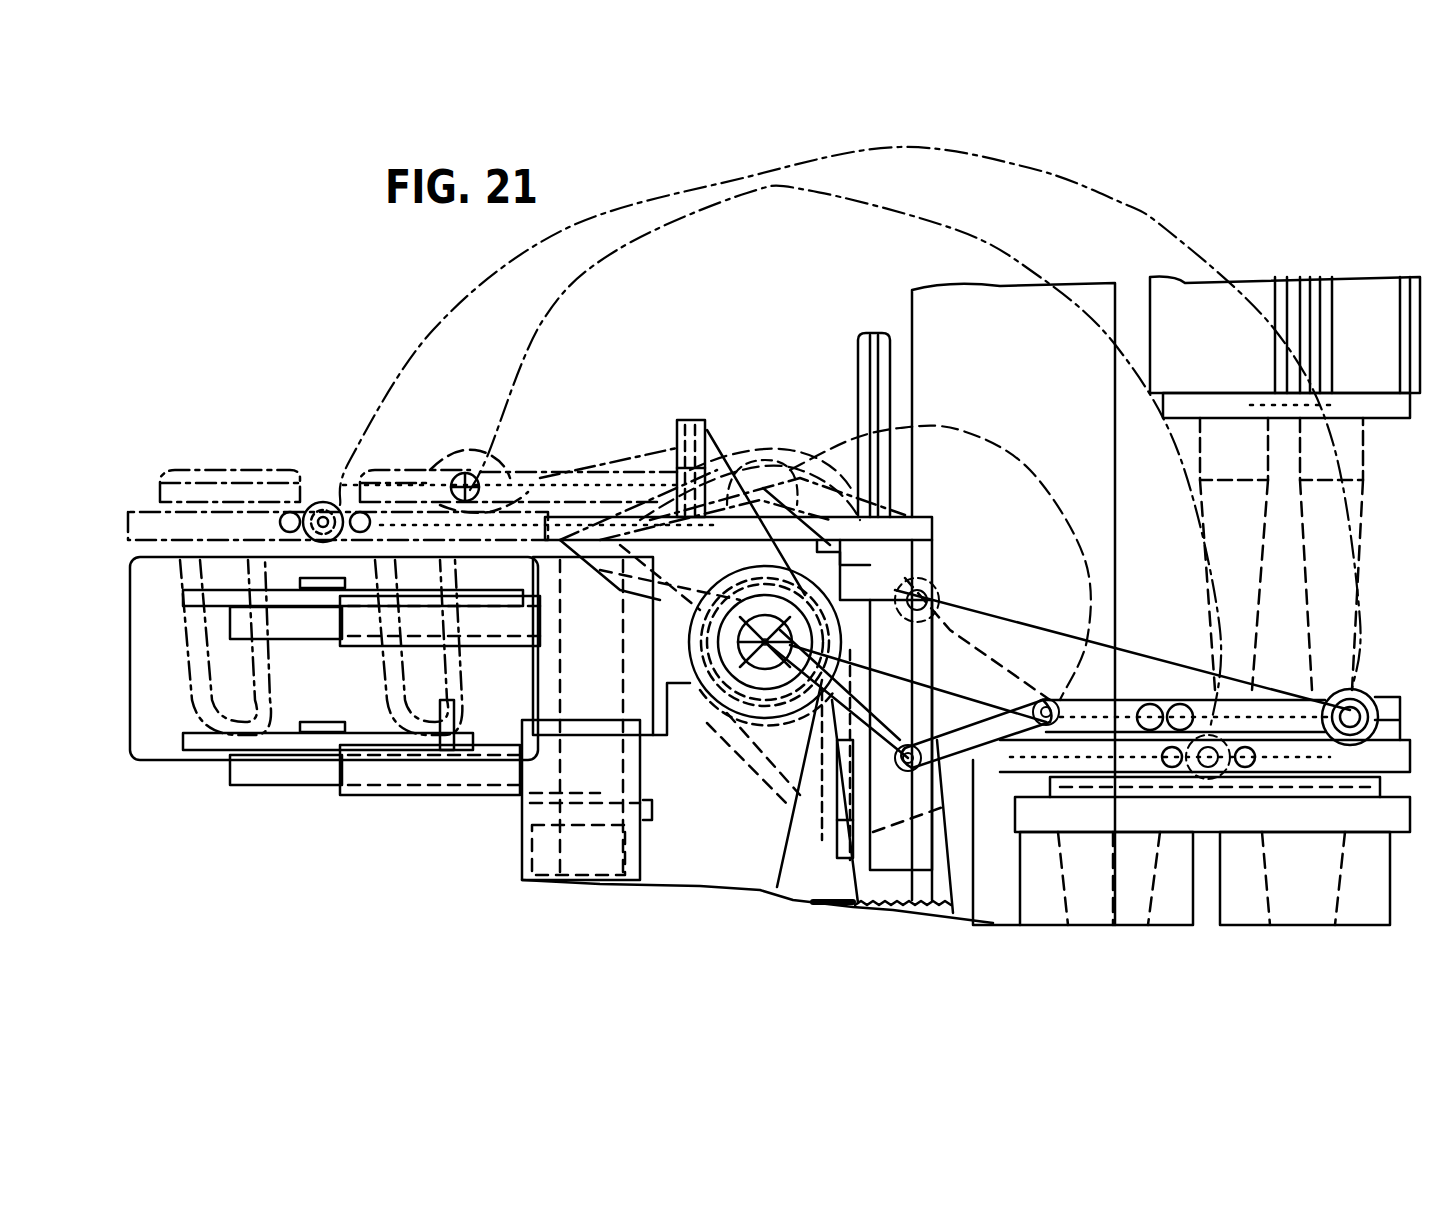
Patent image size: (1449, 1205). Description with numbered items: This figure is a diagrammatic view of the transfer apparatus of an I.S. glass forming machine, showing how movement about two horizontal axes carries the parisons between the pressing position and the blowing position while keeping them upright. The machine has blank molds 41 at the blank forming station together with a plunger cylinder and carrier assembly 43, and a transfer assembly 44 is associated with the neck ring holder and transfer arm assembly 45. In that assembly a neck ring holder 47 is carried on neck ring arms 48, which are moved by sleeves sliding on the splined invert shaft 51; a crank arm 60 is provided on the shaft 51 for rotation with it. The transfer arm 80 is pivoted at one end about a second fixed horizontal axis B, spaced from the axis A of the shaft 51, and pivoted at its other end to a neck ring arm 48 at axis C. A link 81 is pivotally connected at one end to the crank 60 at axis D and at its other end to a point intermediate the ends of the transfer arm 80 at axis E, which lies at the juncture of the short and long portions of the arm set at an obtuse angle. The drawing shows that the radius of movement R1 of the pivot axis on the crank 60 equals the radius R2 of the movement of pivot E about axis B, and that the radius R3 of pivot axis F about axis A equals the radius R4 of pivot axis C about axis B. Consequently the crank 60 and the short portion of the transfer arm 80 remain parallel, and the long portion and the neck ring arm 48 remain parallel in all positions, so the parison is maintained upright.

The blank molds 41 is at (1303, 912).
The plunger cylinder and carrier assembly 43 is at (1338, 296).
The transfer assembly 44 is at (1003, 612).
The neck ring holder and transfer arm assembly 45 is at (1370, 678).
The neck ring holder 47 is at (1398, 765).
The neck ring arms 48 is at (1005, 768).
The invert shaft 51 is at (750, 600).
The crank arm 60 is at (815, 805).
The transfer arm 80 is at (1125, 703).
The link 81 is at (935, 735).
The axis of shaft A is at (733, 693).
The second fixed horizontal axis B is at (925, 600).
The pivot axis C is at (1345, 700).
The pivot axis D is at (908, 770).
The pivot axis E is at (1046, 700).
The pivot axis F is at (1192, 790).
The radius of movement of the pivot axis on crank R1 is at (762, 467).
The radius of movement of pivot E about axis B R2 is at (990, 445).
The radius of movement of pivot axis F about axis A R3 is at (462, 303).
The radius of movement of pivot axis C about axis B R4 is at (578, 283).